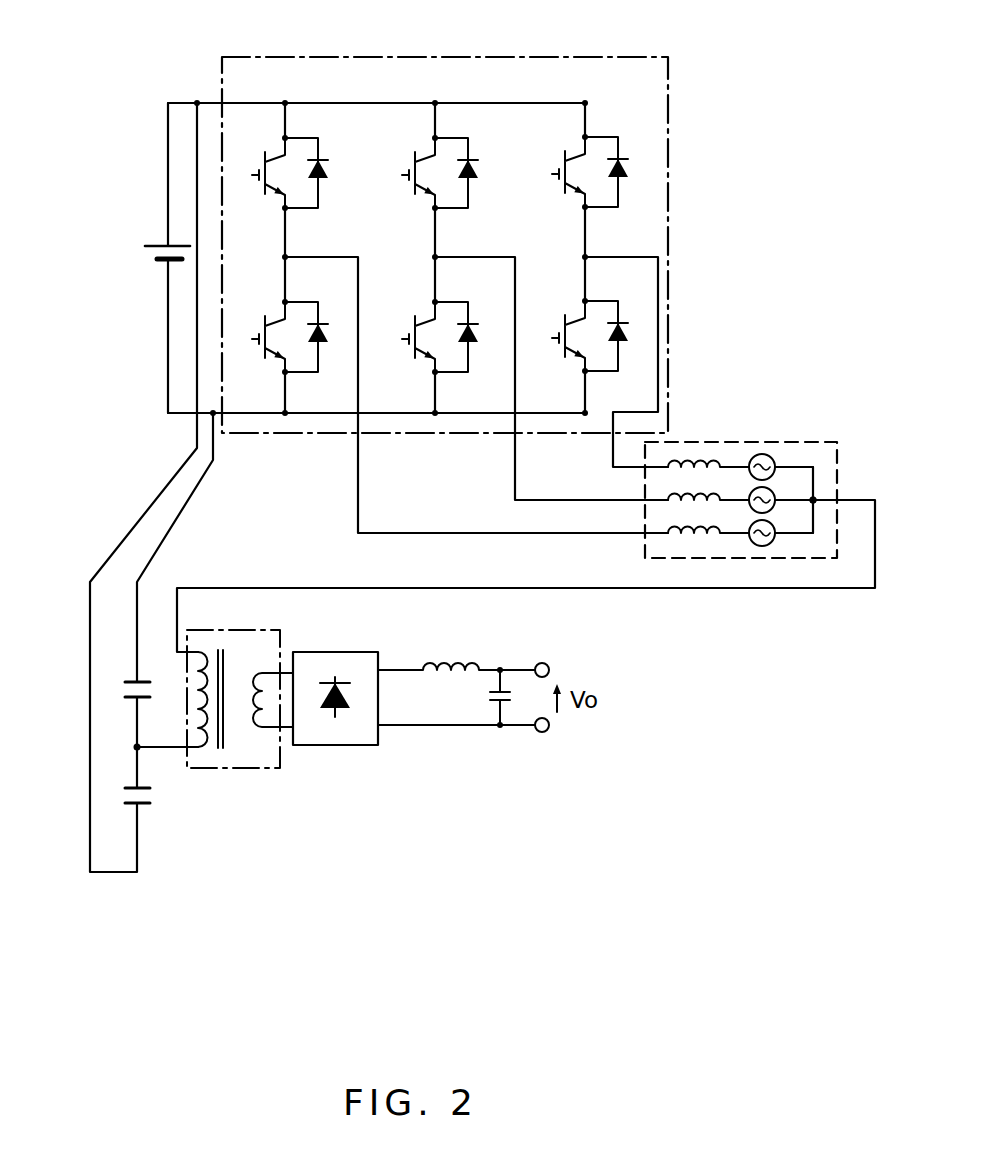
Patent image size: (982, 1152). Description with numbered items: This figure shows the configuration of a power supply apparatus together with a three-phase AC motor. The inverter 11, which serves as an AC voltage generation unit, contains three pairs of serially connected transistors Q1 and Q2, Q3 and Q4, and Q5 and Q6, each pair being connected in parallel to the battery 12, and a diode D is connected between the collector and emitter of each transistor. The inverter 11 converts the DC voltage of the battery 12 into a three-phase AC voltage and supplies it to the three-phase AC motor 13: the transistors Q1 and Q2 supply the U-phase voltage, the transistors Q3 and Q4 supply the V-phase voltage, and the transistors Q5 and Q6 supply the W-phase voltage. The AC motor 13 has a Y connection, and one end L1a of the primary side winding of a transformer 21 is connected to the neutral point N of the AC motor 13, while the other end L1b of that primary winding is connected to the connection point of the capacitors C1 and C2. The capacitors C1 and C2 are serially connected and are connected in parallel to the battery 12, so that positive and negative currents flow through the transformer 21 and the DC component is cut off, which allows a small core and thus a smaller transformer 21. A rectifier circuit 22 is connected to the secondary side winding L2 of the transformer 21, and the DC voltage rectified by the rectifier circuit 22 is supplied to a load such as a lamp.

The inverter 11 is at (585, 56).
The battery 12 is at (161, 245).
The 3-phase AC motor 13 is at (782, 442).
The transformer 21 is at (262, 730).
The rectifier circuit 22 is at (345, 652).
The transistor Q1 is at (280, 165).
The transistor Q2 is at (281, 332).
The transistor Q3 is at (430, 165).
The transistor Q4 is at (427, 332).
The transistor Q5 is at (579, 163).
The transistor Q6 is at (580, 331).
The diode D is at (330, 172).
The capacitor C1 is at (131, 683).
The capacitor C2 is at (128, 791).
The one end of the primary side winding L1a is at (200, 632).
The other end of the primary side winding L1b is at (199, 752).
The secondary side winding L2 is at (268, 737).
The neutral point N is at (816, 500).